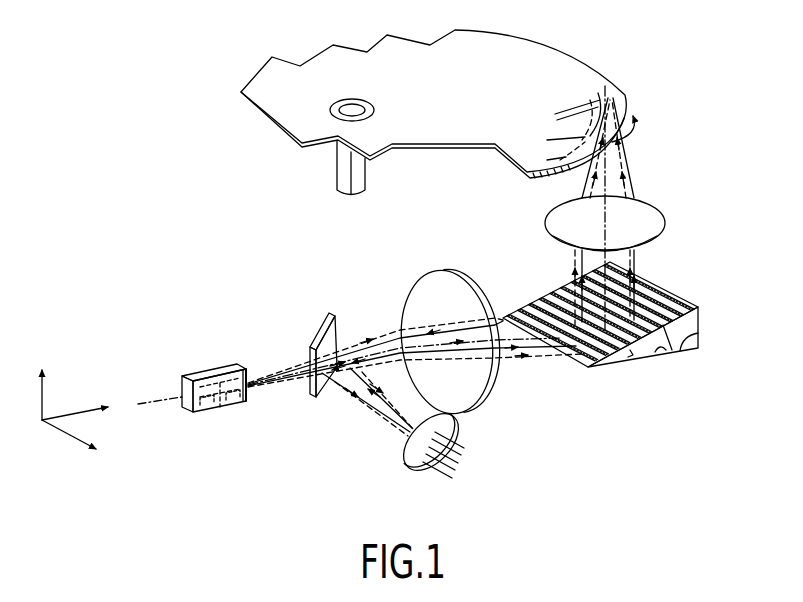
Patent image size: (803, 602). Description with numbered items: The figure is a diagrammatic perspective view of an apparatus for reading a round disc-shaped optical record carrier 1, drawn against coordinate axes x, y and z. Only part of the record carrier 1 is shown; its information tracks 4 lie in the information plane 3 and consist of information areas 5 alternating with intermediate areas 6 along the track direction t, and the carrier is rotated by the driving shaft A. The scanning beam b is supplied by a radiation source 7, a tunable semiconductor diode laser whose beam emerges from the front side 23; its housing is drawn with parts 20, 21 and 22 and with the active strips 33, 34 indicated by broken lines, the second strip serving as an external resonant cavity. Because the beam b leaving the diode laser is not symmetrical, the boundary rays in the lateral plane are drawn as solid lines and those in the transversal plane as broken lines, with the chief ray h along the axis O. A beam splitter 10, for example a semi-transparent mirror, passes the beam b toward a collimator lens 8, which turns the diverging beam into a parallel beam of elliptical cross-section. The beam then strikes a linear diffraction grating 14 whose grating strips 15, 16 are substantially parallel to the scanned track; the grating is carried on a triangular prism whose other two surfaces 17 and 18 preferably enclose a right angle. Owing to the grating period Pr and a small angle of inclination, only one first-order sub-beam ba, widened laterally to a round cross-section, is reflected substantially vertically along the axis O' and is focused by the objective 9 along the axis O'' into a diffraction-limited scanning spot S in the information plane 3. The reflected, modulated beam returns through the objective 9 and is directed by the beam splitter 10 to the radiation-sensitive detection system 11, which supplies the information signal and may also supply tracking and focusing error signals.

The record carrier 1 is at (262, 126).
The information plane 3 is at (444, 98).
The information track 4 is at (570, 114).
The information area 5 is at (556, 158).
The intermediate area 6 is at (560, 127).
The radiation source 7 is at (213, 352).
The collimator lens 8 is at (491, 368).
The objective 9 is at (660, 223).
The beam splitter 10 is at (313, 396).
The radiation-sensitive detection system 11 is at (409, 454).
The linear diffraction grating 14 is at (668, 283).
The grating strip 15 is at (666, 300).
The grating strip 16 is at (701, 311).
The prism surface 17 is at (700, 322).
The prism surface 18 is at (615, 368).
The diode laser housing 20 is at (203, 375).
The laser active layer 21 is at (218, 404).
The laser substrate 22 is at (188, 400).
The front side 23 is at (250, 376).
The active strip 33 is at (222, 408).
The active strip 34 is at (246, 402).
The driving shaft A is at (360, 181).
The scanning spot S is at (617, 90).
The track direction t is at (639, 125).
The optical axis at laser O is at (158, 411).
The optical axis at prism O' is at (724, 284).
The optical axis at disc O'' is at (646, 160).
The first-order sub-beam ba is at (573, 265).
The grating period Pr is at (547, 297).
The chief ray h is at (378, 352).
The scanning beam b is at (300, 368).
The X axis x is at (78, 422).
The Y axis y is at (70, 447).
The Z axis z is at (55, 391).